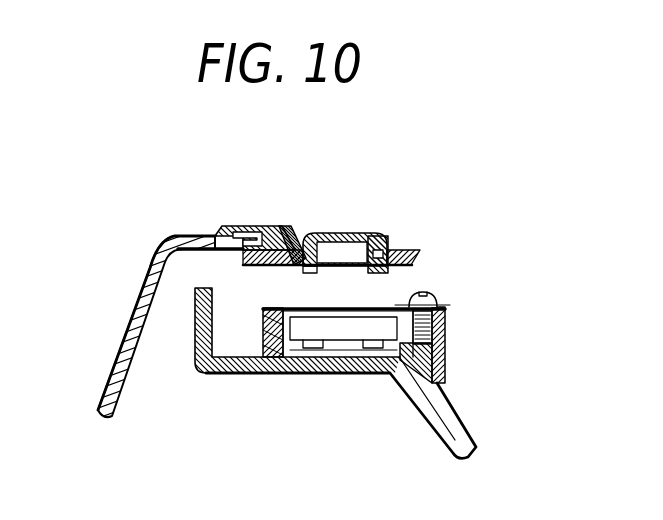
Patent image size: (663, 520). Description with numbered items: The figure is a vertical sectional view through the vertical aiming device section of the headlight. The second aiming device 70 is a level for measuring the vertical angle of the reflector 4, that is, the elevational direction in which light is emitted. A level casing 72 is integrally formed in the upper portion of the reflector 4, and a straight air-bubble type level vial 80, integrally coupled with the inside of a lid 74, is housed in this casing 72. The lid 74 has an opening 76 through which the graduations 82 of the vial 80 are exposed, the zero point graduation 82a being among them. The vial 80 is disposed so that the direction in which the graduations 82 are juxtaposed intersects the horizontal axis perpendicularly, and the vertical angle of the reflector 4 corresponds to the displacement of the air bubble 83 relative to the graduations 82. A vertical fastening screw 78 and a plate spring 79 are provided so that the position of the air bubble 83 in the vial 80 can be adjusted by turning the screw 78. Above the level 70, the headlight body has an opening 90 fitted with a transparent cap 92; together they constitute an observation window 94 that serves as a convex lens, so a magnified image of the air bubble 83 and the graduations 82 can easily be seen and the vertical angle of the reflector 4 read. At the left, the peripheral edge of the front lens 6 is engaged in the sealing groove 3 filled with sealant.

The sealing groove 3 is at (244, 228).
The reflector 4 is at (232, 375).
The front lens 6 is at (129, 322).
The second aiming device 70 is at (430, 290).
The level casing 72 is at (272, 304).
The lid 74 is at (441, 312).
The opening 76 is at (287, 238).
The vertical fastening screw 78 is at (440, 300).
The plate spring 79 is at (447, 330).
The level vial 80 is at (340, 334).
The graduations 82 is at (395, 297).
The zero point graduation 82a is at (344, 305).
The air bubble 83 is at (355, 378).
The opening 90 is at (369, 237).
The transparent cap 92 is at (350, 232).
The observation window 94 is at (328, 232).